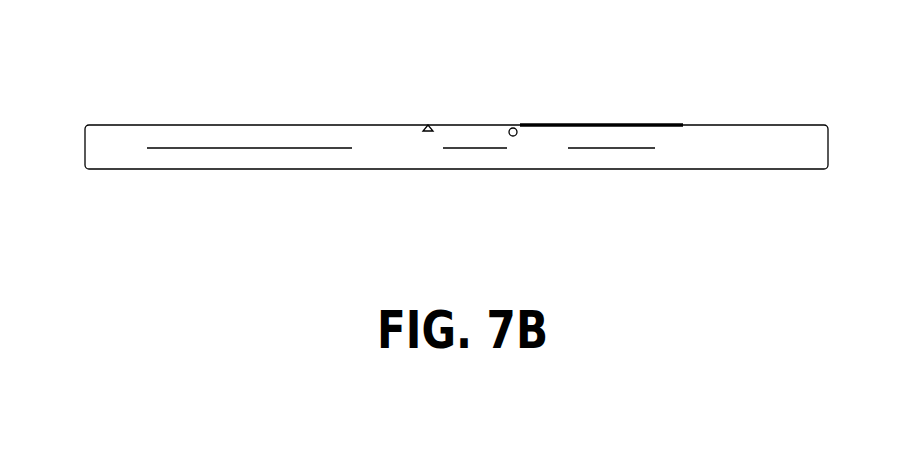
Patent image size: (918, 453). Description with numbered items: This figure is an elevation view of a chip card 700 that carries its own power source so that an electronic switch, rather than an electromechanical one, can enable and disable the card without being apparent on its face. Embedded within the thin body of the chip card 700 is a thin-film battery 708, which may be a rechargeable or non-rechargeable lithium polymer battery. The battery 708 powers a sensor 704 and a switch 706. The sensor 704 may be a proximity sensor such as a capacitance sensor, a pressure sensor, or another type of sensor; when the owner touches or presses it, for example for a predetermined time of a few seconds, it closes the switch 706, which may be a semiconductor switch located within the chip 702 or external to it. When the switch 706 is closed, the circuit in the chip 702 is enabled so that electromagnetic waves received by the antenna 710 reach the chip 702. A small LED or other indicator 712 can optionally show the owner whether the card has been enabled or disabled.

The chip card 700 is at (118, 82).
The chip 702 is at (628, 148).
The sensor 704 is at (428, 132).
The switch 706 is at (478, 148).
The thin-film battery 708 is at (242, 148).
The antenna 710 is at (573, 123).
The indicator 712 is at (513, 128).